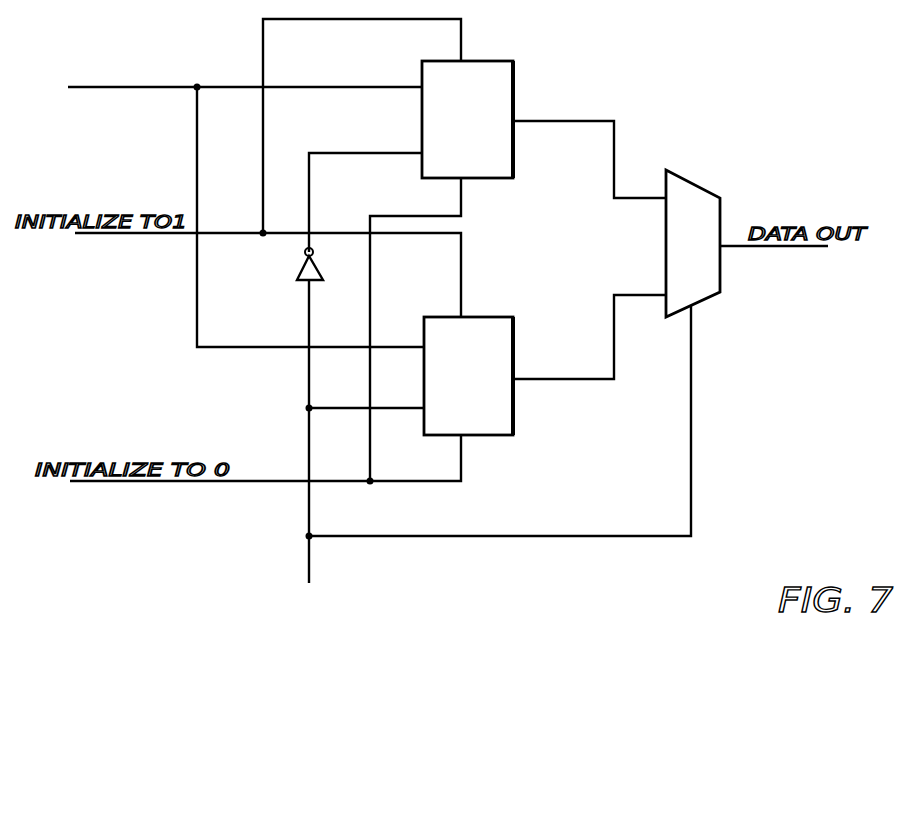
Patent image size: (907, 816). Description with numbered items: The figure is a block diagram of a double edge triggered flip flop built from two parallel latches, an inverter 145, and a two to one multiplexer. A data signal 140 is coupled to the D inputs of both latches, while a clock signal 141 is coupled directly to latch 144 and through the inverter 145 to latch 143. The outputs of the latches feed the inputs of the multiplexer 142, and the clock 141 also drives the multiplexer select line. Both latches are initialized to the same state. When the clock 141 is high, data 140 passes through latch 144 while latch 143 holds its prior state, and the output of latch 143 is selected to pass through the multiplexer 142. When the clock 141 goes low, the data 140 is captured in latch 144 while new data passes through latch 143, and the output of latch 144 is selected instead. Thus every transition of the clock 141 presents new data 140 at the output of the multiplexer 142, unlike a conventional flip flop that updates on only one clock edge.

The data signal 140 is at (140, 52).
The clock signal 141 is at (302, 622).
The multiplexer 142 is at (703, 198).
The latch 143 is at (515, 77).
The latch 144 is at (515, 328).
The inverter 145 is at (302, 278).